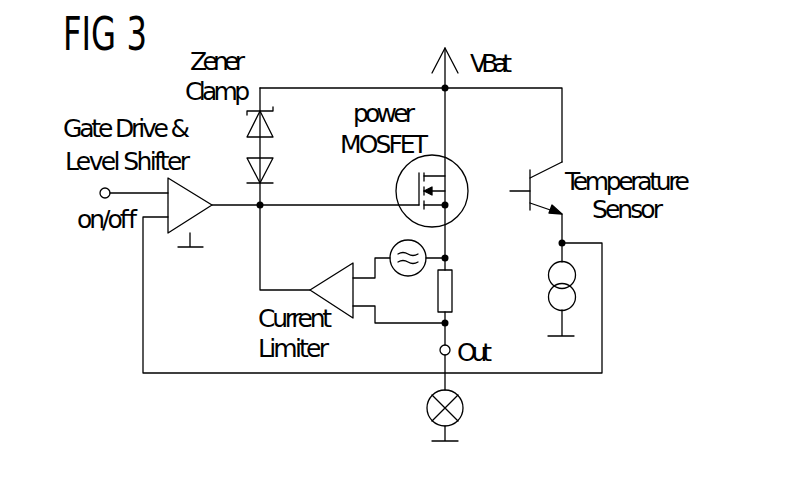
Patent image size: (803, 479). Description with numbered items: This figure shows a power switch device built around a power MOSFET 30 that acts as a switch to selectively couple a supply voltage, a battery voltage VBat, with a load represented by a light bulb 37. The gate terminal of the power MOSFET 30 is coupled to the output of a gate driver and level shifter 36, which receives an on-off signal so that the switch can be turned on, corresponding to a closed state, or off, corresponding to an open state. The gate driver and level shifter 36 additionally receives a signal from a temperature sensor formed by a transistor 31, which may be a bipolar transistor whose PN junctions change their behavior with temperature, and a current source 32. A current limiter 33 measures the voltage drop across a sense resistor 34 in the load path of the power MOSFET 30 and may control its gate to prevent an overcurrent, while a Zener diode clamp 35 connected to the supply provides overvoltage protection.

The power MOSFET 30 is at (396, 194).
The transistor 31 is at (530, 178).
The current source 32 is at (549, 277).
The current limiter 33 is at (330, 274).
The sense resistor 34 is at (453, 292).
The Zener diode clamp 35 is at (264, 114).
The gate driver and level shifter 36 is at (193, 191).
The light bulb 37 is at (463, 406).